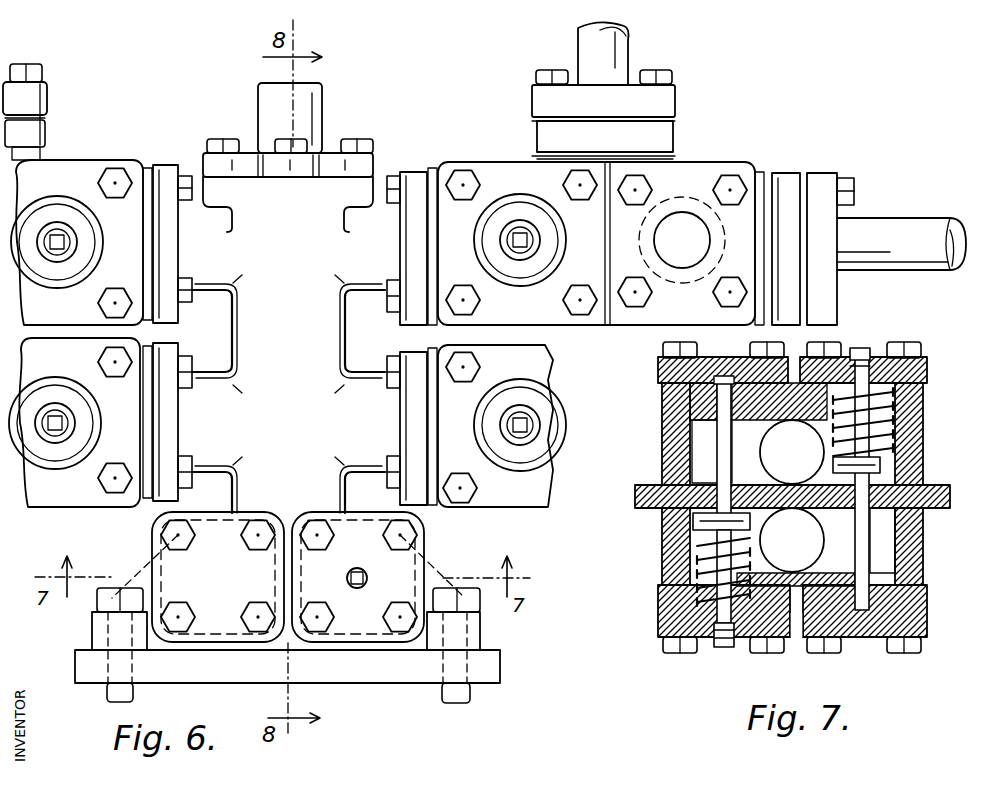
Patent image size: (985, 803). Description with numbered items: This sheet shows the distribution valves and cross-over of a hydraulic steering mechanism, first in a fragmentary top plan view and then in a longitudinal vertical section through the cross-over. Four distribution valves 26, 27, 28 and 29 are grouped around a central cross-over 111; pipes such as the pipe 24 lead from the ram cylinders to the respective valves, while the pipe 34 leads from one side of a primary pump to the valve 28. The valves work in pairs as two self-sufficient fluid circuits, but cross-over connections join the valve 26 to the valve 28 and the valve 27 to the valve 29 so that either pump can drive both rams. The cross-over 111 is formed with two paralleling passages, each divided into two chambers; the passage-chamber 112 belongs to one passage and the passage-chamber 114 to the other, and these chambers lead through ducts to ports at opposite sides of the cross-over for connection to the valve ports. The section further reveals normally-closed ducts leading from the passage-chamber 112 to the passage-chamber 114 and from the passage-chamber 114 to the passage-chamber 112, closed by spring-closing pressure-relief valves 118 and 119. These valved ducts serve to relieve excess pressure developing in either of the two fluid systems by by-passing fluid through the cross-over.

In FIG. 6, the pipe 24 is at (622, 48).
In FIG. 6, the distribution valve 26 is at (95, 512).
In FIG. 6, the distribution valve 27 is at (504, 516).
In FIG. 6, the distribution valve 28 is at (499, 154).
In FIG. 6, the distribution valve 29 is at (108, 155).
In FIG. 6, the pipe 34 is at (917, 230).
In FIG. 6, the cross-over 111 is at (356, 331).
In FIG. 7, the cross-over 111 is at (952, 430).
In FIG. 7, the passage-chamber 112 is at (890, 539).
In FIG. 7, the passage-chamber 114 is at (700, 449).
In FIG. 7, the pressure-relief valve 118 is at (850, 508).
In FIG. 7, the pressure-relief valve 119 is at (735, 513).